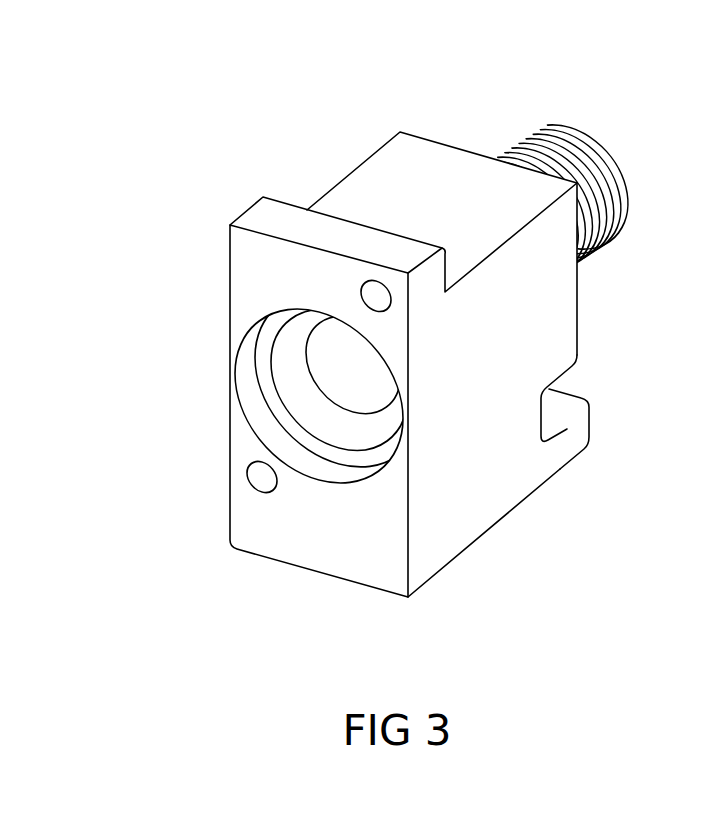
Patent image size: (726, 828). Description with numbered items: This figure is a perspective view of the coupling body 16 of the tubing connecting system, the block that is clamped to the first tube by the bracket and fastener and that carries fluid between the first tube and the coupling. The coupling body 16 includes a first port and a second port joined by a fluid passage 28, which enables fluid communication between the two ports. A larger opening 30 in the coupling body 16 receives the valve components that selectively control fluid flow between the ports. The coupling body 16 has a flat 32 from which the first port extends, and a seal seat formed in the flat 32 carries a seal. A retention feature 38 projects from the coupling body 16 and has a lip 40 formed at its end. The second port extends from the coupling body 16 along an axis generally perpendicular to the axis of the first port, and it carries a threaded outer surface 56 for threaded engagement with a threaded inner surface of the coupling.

The coupling body 16 is at (342, 178).
The fluid passage 28 is at (356, 372).
The opening 30 is at (248, 358).
The flat 32 is at (511, 516).
The retention feature 38 is at (600, 437).
The lip 40 is at (585, 391).
The threaded outer surface 56 is at (557, 143).